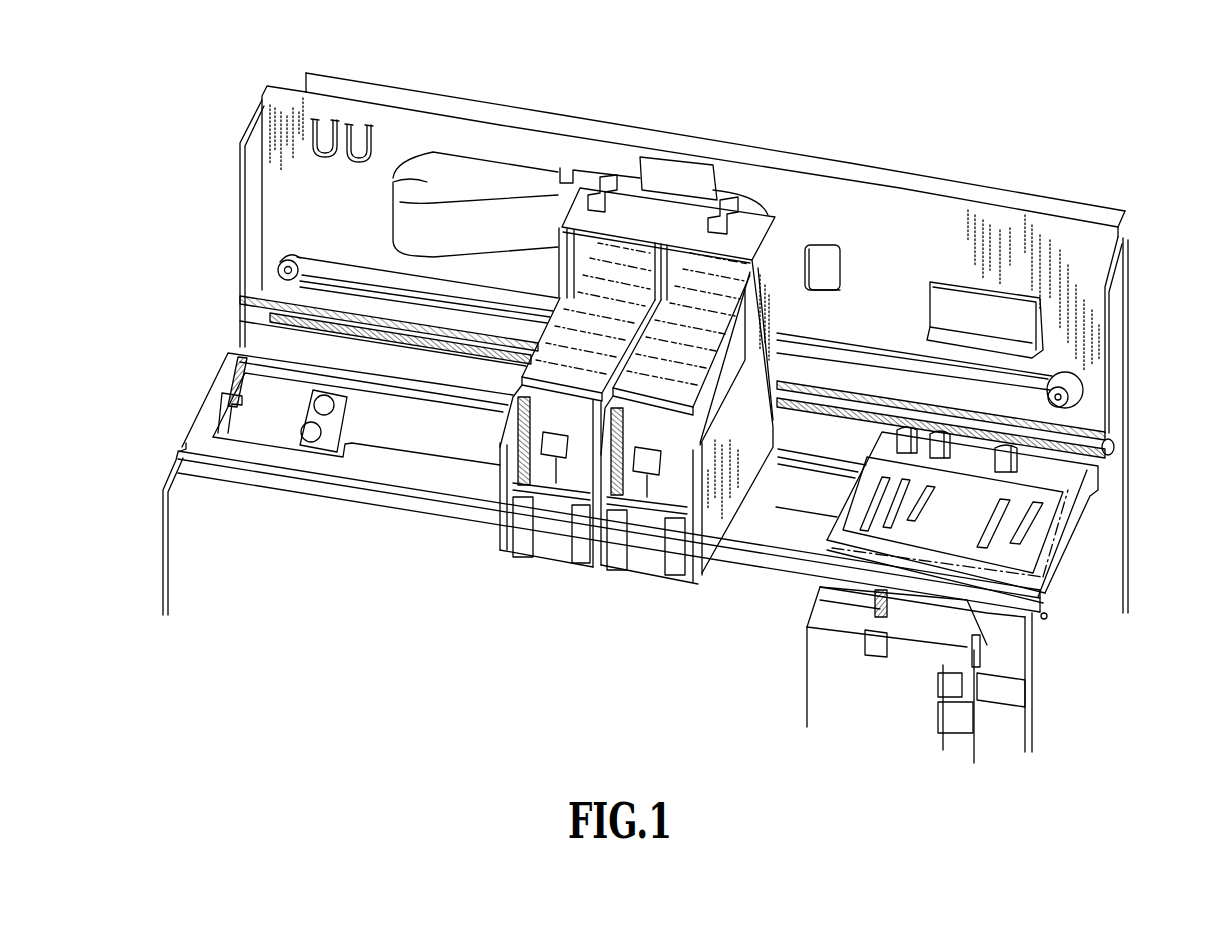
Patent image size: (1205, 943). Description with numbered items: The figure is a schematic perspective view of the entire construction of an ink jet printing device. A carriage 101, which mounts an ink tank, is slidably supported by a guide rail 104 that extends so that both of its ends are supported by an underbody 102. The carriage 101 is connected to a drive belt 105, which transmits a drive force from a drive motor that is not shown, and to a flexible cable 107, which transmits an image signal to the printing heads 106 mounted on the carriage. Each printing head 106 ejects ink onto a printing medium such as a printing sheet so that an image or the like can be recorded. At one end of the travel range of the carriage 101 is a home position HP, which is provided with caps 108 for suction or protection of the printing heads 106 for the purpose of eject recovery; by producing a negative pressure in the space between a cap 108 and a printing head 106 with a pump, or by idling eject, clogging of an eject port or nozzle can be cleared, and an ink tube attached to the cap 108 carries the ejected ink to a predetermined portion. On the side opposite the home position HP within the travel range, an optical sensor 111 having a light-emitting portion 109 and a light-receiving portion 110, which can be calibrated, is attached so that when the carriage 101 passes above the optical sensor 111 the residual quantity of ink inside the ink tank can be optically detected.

The carriage 101 is at (710, 537).
The underbody 102 is at (1047, 665).
The guide rail 104 is at (240, 297).
The drive belt 105 is at (868, 347).
The printing head 106 is at (555, 545).
The flexible cable 107 is at (393, 180).
The cap 108 is at (900, 494).
The light-emitting portion 109 is at (303, 447).
The light-receiving portion 110 is at (312, 398).
The optical sensor 111 is at (298, 432).
The home position HP is at (1060, 513).